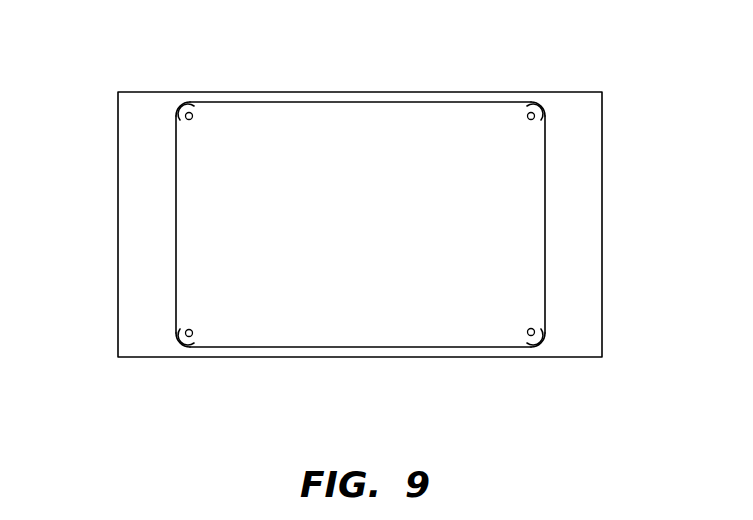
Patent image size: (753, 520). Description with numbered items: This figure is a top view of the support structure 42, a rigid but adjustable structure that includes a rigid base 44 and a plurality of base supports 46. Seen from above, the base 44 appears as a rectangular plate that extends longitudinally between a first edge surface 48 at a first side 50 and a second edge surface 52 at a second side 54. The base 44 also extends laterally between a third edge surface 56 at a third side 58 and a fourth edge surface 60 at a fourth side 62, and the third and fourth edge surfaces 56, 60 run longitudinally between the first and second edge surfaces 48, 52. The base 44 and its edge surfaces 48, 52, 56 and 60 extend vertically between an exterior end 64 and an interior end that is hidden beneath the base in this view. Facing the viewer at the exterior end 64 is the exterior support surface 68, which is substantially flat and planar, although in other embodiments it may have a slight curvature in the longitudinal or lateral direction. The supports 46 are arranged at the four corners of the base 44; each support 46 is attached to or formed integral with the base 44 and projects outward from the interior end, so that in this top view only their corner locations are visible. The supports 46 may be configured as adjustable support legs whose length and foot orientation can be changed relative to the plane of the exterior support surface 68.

The support structure 42 is at (358, 226).
The base 44 is at (173, 217).
The base supports 46 is at (170, 108).
The first edge surface 48 is at (102, 224).
The first side 50 is at (177, 287).
The second edge surface 52 is at (617, 224).
The second side 54 is at (547, 282).
The third edge surface 56 is at (360, 385).
The third side 58 is at (342, 347).
The fourth edge surface 60 is at (360, 64).
The fourth side 62 is at (344, 103).
The exterior end 64 is at (360, 385).
The exterior support surface 68 is at (360, 64).